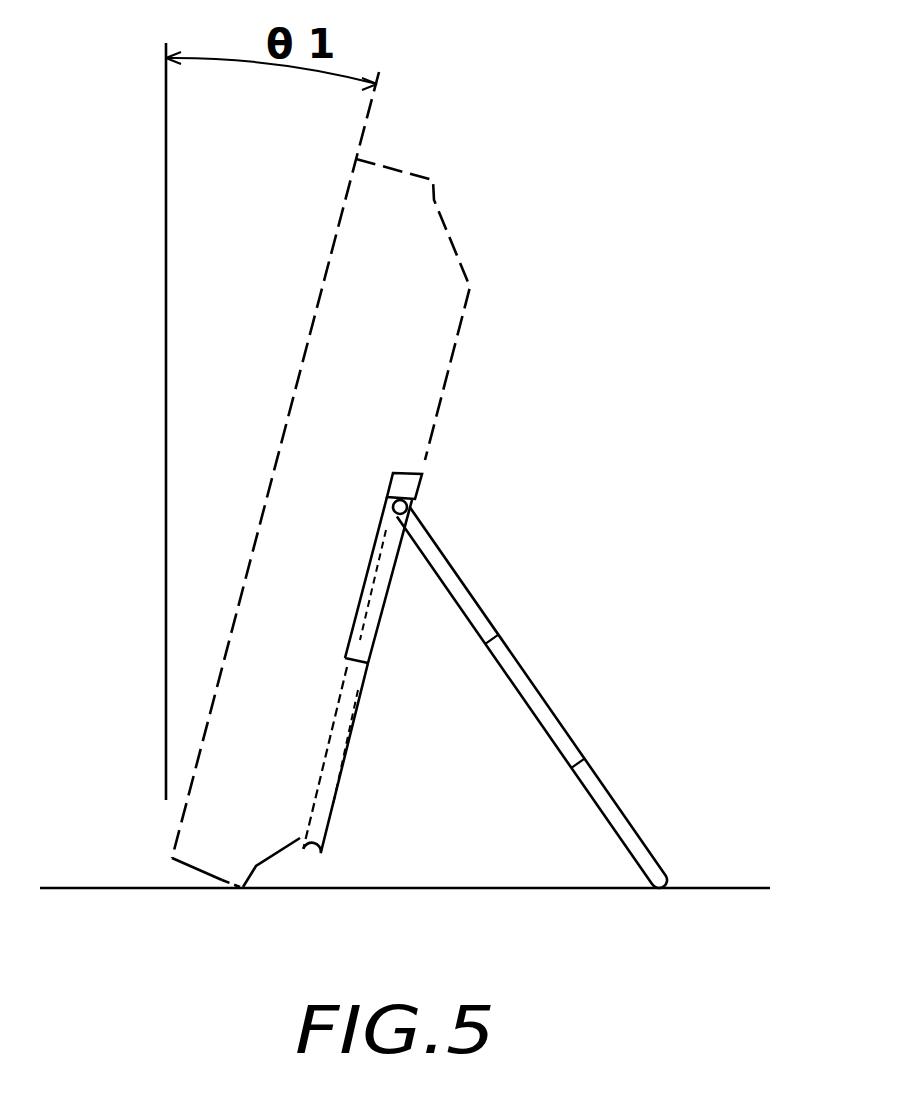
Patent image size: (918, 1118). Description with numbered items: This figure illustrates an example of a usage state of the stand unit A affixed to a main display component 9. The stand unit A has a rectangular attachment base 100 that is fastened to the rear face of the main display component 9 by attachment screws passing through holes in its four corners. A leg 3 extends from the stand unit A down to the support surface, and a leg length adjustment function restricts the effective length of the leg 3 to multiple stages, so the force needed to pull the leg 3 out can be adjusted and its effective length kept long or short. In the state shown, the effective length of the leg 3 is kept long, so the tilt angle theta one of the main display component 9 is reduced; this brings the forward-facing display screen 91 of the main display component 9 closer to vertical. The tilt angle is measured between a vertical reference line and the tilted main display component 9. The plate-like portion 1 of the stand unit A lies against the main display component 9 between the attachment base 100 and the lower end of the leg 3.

The main display component 9 is at (388, 167).
The forward-facing display screen 91 is at (310, 330).
The attachment base 100 is at (403, 473).
The stand plate 1 is at (373, 632).
The leg 3 is at (353, 731).
The stand unit A is at (595, 575).